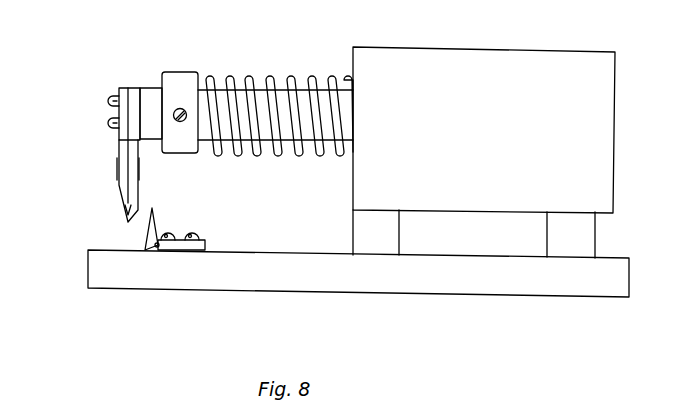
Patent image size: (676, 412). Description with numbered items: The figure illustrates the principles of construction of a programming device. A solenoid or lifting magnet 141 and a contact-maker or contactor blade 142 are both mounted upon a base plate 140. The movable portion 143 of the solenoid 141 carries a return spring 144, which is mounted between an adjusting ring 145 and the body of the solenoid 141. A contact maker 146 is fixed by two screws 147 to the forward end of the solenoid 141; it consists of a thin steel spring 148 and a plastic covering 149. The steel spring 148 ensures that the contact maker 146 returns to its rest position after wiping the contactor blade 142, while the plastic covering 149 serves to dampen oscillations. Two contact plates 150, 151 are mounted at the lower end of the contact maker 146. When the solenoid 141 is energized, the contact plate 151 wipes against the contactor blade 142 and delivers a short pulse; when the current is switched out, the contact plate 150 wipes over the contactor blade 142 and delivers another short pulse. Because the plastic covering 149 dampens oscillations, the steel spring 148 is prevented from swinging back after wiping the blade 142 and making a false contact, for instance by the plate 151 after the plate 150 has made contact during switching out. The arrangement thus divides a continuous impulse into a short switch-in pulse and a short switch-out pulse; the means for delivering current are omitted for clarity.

The base plate 140 is at (380, 273).
The solenoid 141 is at (358, 190).
The contactor blade 142 is at (155, 218).
The movable portion 143 is at (152, 98).
The return spring 144 is at (290, 80).
The adjusting ring 145 is at (173, 82).
The contact maker 146 is at (124, 150).
The screws 147 is at (108, 106).
The steel spring 148 is at (130, 98).
The plastic covering 149 is at (118, 91).
The contact plate 150 is at (119, 187).
The contact plate 151 is at (139, 177).